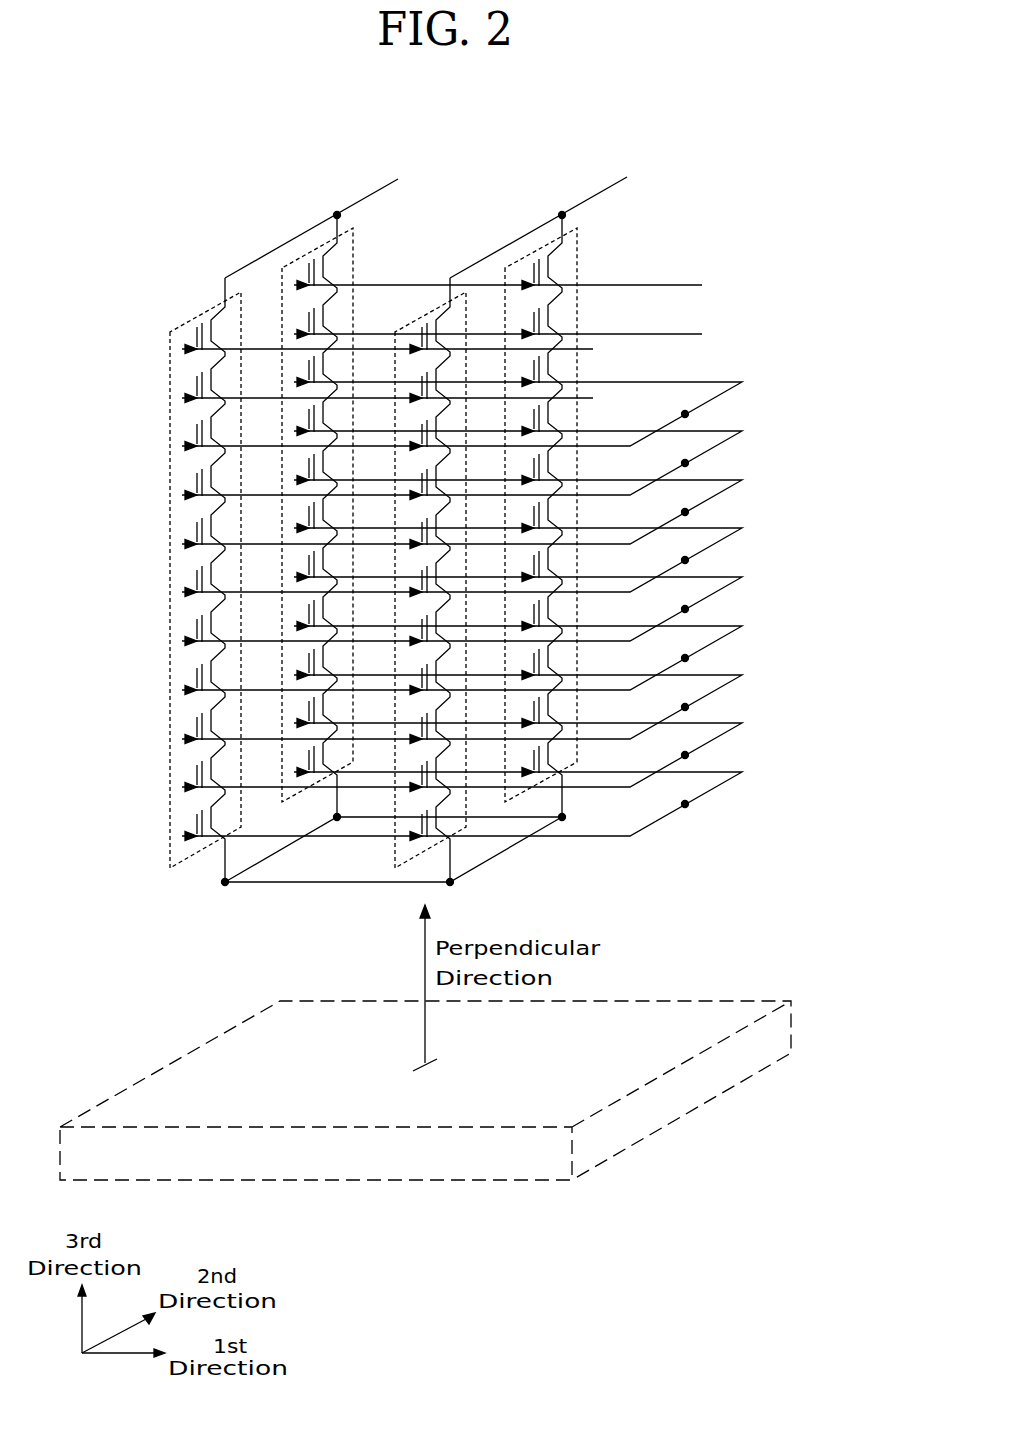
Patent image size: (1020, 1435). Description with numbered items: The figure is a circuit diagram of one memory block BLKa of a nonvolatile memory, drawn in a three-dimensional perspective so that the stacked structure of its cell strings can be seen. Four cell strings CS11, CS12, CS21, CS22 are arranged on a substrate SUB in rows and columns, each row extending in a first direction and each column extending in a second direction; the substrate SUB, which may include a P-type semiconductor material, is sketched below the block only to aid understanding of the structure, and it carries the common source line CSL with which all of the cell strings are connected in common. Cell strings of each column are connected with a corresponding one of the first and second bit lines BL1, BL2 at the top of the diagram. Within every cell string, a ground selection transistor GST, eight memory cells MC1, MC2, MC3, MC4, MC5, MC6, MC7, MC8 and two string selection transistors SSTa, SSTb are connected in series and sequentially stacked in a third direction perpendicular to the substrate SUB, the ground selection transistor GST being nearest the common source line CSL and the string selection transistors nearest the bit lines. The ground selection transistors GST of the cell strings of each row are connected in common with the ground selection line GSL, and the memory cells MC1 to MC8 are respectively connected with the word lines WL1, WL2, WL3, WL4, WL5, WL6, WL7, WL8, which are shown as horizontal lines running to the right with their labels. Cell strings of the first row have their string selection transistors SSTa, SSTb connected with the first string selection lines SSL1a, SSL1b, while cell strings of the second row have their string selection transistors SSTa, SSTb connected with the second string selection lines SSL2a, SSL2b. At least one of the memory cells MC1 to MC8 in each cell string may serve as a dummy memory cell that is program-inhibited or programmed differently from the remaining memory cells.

The memory block BLKa is at (777, 108).
The first bit line BL1 is at (546, 215).
The second bit line BL2 is at (322, 215).
The cell string CS11 is at (418, 328).
The cell string CS12 is at (194, 330).
The cell string CS21 is at (528, 262).
The cell string CS22 is at (304, 262).
The string selection transistor SSTb is at (186, 335).
The string selection transistor SSTa is at (186, 384).
The memory cell MC8 is at (186, 432).
The memory cell MC7 is at (186, 481).
The memory cell MC6 is at (186, 530).
The memory cell MC5 is at (186, 578).
The memory cell MC4 is at (186, 627).
The memory cell MC3 is at (186, 676).
The memory cell MC2 is at (186, 725).
The memory cell MC1 is at (186, 773).
The ground selection transistor GST is at (186, 822).
The second string selection line SSL2b is at (532, 285).
The second string selection line SSL2a is at (532, 334).
The first string selection line SSL1b is at (419, 349).
The first string selection line SSL1a is at (419, 398).
The word line WL8 is at (689, 414).
The word line WL7 is at (689, 463).
The word line WL6 is at (689, 512).
The word line WL5 is at (689, 560).
The word line WL4 is at (689, 609).
The word line WL3 is at (689, 658).
The word line WL2 is at (689, 707).
The word line WL1 is at (689, 755).
The ground selection line GSL is at (689, 804).
The common source line CSL is at (394, 852).
The substrate SUB is at (700, 1078).